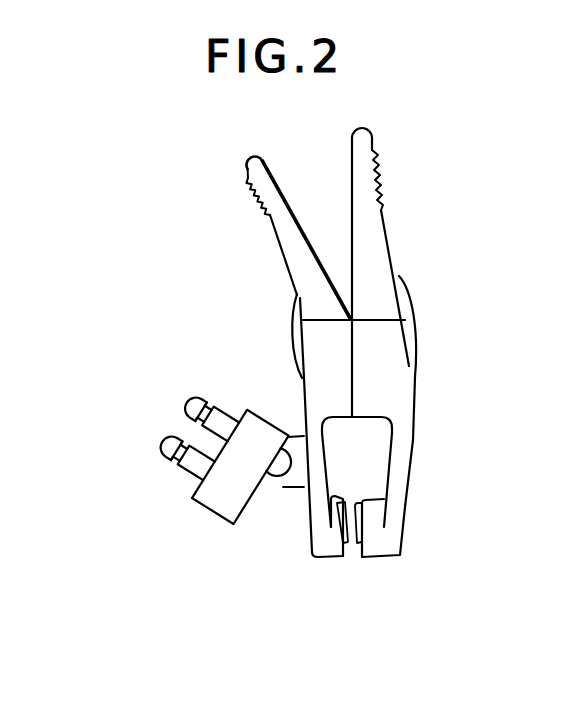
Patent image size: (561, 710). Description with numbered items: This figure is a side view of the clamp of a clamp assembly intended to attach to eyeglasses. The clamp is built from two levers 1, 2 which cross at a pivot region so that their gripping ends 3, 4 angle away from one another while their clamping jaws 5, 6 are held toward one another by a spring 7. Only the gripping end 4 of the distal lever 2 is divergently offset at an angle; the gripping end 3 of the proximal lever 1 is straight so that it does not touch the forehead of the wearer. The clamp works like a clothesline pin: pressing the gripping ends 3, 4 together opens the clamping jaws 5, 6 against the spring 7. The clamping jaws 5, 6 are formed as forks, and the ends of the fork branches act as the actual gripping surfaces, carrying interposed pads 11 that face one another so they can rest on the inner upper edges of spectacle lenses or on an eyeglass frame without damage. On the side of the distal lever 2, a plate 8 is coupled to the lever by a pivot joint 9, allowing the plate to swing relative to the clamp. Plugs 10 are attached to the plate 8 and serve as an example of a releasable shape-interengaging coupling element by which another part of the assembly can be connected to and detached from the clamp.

The proximal lever 1 is at (370, 285).
The distal lever 2 is at (313, 292).
The gripping end 3 is at (362, 157).
The gripping end 4 is at (257, 180).
The clamping jaw 5 is at (388, 540).
The clamping jaw 6 is at (323, 537).
The spring 7 is at (293, 342).
The plate 8 is at (223, 497).
The pivot joint 9 is at (275, 472).
The plugs 10 is at (153, 452).
The pads 11 is at (345, 543).